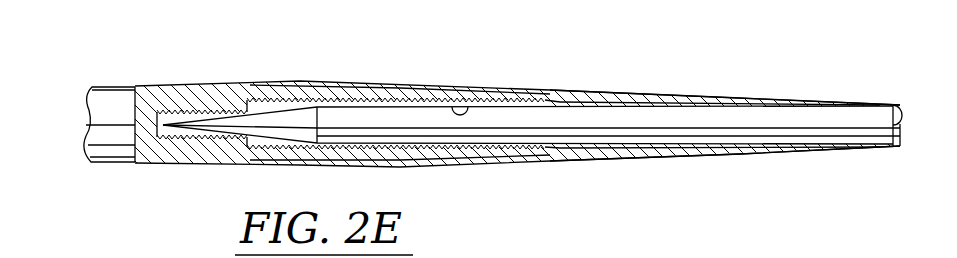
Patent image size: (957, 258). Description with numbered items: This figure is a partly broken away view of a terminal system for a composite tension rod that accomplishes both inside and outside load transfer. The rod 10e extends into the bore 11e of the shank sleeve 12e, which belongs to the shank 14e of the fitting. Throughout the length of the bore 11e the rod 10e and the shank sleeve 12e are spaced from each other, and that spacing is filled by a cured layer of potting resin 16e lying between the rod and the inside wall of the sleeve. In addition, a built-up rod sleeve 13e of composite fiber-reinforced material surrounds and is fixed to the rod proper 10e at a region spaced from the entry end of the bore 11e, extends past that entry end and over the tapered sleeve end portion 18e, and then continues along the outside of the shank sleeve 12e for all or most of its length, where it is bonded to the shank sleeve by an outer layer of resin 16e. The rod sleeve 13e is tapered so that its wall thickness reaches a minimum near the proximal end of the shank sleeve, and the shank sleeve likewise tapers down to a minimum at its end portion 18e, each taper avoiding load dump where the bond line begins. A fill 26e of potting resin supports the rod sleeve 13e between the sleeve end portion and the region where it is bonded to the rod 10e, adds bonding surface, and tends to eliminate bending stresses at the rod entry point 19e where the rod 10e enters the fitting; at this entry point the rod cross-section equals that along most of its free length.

The rod 10e is at (892, 104).
The bore 11e is at (458, 106).
The shank sleeve 12e is at (420, 93).
The rod sleeve 13e is at (473, 91).
The shank 14e is at (114, 87).
The layer of potting resin 16e is at (335, 84).
The sleeve end portion 18e is at (500, 90).
The rod entry point 19e is at (545, 152).
The fill of potting resin 26e is at (570, 99).